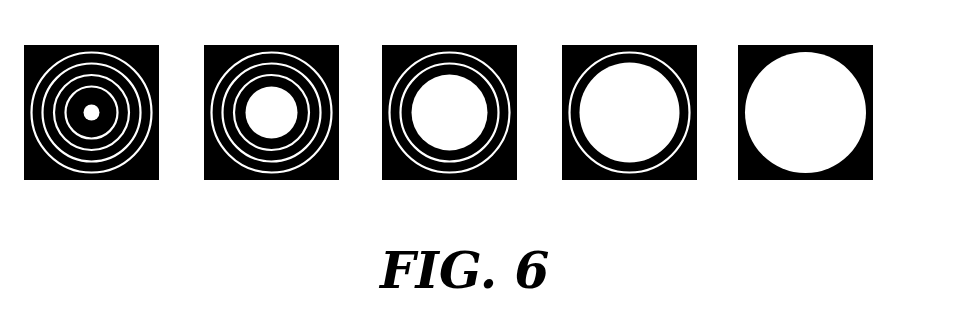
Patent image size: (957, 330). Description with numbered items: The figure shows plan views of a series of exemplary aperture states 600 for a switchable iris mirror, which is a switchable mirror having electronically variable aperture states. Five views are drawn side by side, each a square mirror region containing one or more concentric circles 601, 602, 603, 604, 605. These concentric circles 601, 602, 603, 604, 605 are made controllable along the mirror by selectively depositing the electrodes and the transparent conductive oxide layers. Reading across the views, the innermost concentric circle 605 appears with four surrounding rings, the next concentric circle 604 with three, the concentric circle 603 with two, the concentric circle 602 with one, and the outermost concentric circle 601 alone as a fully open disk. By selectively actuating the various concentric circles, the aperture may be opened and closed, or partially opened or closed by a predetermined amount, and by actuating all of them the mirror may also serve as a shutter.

The concentric circle 601 is at (805, 113).
The concentric circle 602 is at (629, 113).
The concentric circle 603 is at (449, 113).
The concentric circle 604 is at (272, 113).
The concentric circle 605 is at (91, 113).
The aperture states 600 is at (215, 243).